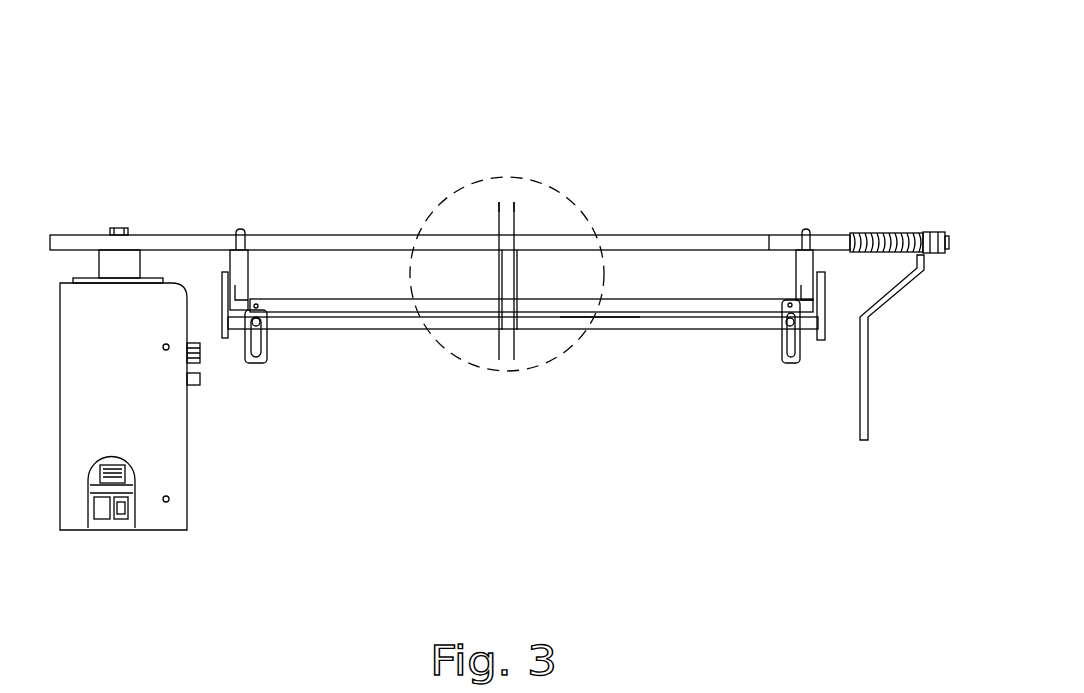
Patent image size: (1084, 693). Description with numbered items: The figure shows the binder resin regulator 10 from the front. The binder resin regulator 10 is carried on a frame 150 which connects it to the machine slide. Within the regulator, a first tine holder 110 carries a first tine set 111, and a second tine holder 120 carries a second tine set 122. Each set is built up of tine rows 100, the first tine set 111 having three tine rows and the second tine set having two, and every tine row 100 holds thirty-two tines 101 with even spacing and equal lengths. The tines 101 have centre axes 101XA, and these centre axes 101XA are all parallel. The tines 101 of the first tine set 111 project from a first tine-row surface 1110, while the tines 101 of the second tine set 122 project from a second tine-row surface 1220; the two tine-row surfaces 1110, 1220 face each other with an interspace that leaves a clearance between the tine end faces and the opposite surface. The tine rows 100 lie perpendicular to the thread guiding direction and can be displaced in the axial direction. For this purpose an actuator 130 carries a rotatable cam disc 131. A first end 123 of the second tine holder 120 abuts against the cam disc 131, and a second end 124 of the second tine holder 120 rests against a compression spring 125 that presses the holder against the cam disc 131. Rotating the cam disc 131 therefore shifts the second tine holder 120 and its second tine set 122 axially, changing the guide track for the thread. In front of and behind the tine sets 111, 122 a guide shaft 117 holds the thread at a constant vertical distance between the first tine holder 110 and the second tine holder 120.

The binder resin regulator 10 is at (810, 77).
The second tine holder 120 is at (617, 235).
The second tine-row surface 1220 is at (341, 255).
The cam disc 131 is at (88, 235).
The first end of the second tine holder 123 is at (157, 247).
The actuator 130 is at (187, 443).
The guide shaft 117 is at (315, 313).
The first tine holder 110 is at (647, 329).
The first tine-row surface 1110 is at (612, 315).
The tine row 100 is at (492, 285).
The tine 101 is at (492, 285).
The second tine set 122 is at (497, 273).
The first tine set 111 is at (515, 280).
The centre axis of tine 101XA is at (500, 212).
The second end of the second tine holder 124 is at (865, 237).
The compression spring 125 is at (897, 237).
The frame 150 is at (861, 440).